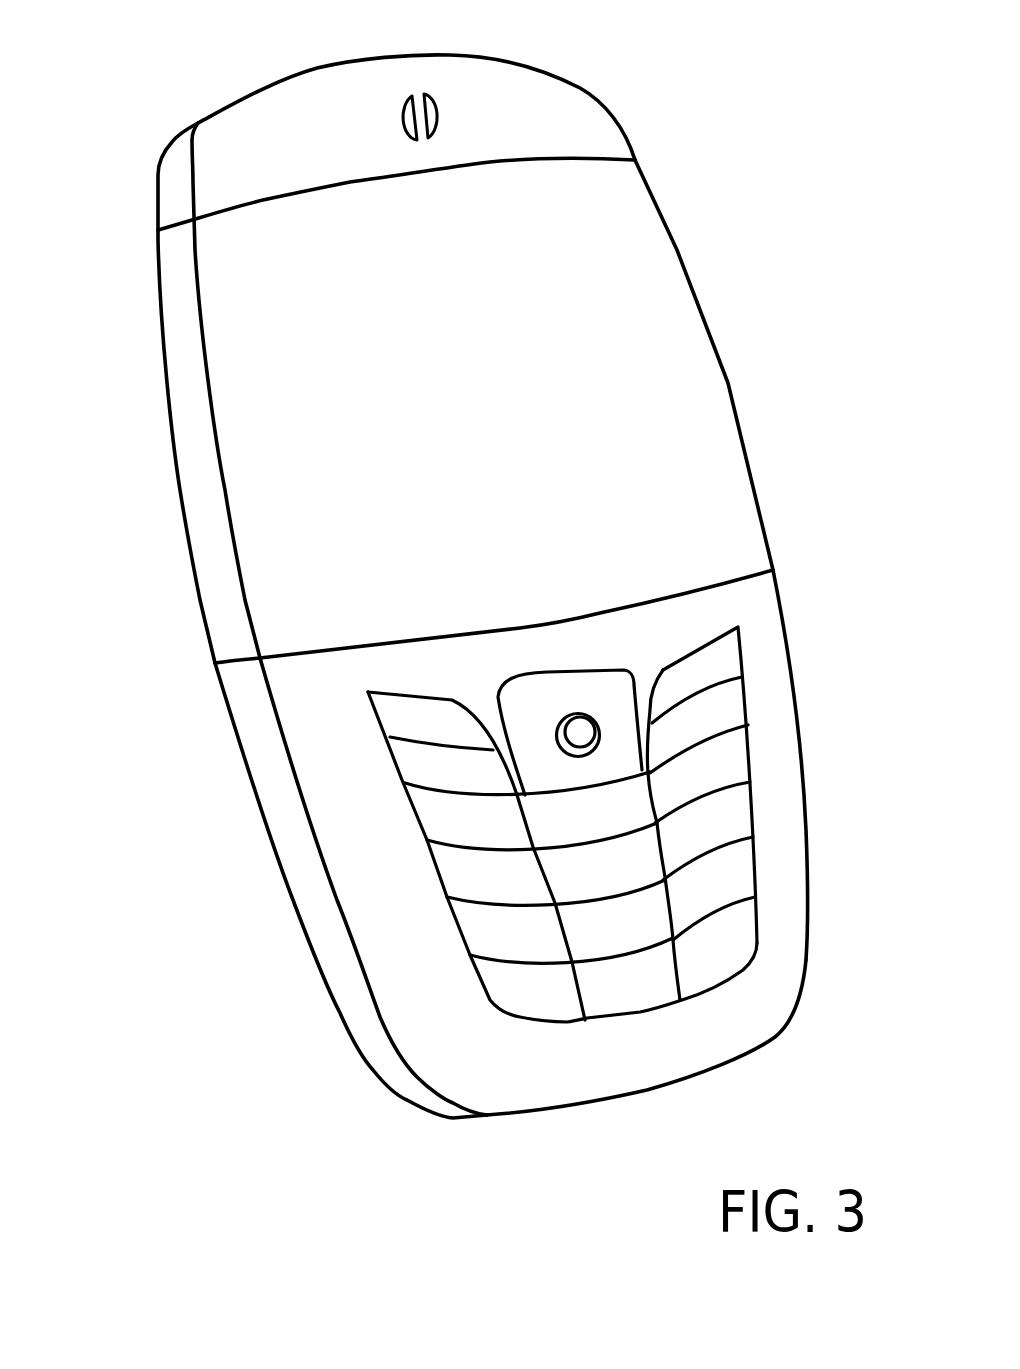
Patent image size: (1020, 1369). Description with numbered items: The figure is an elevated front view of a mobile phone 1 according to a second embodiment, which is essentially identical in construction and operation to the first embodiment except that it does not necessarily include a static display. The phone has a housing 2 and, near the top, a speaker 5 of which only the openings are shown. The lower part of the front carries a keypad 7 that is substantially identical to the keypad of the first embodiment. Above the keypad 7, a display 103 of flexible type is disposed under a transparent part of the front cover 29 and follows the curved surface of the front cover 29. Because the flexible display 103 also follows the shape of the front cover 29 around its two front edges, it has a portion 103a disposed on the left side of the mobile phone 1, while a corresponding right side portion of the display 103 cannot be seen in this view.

The mobile phone 1 is at (657, 70).
The housing 2 is at (263, 782).
The speaker 5 is at (419, 107).
The keypad 7 is at (415, 906).
The front cover 29 is at (762, 607).
The flexible display 103 is at (697, 395).
The left side portion of the flexible display 103a is at (188, 412).